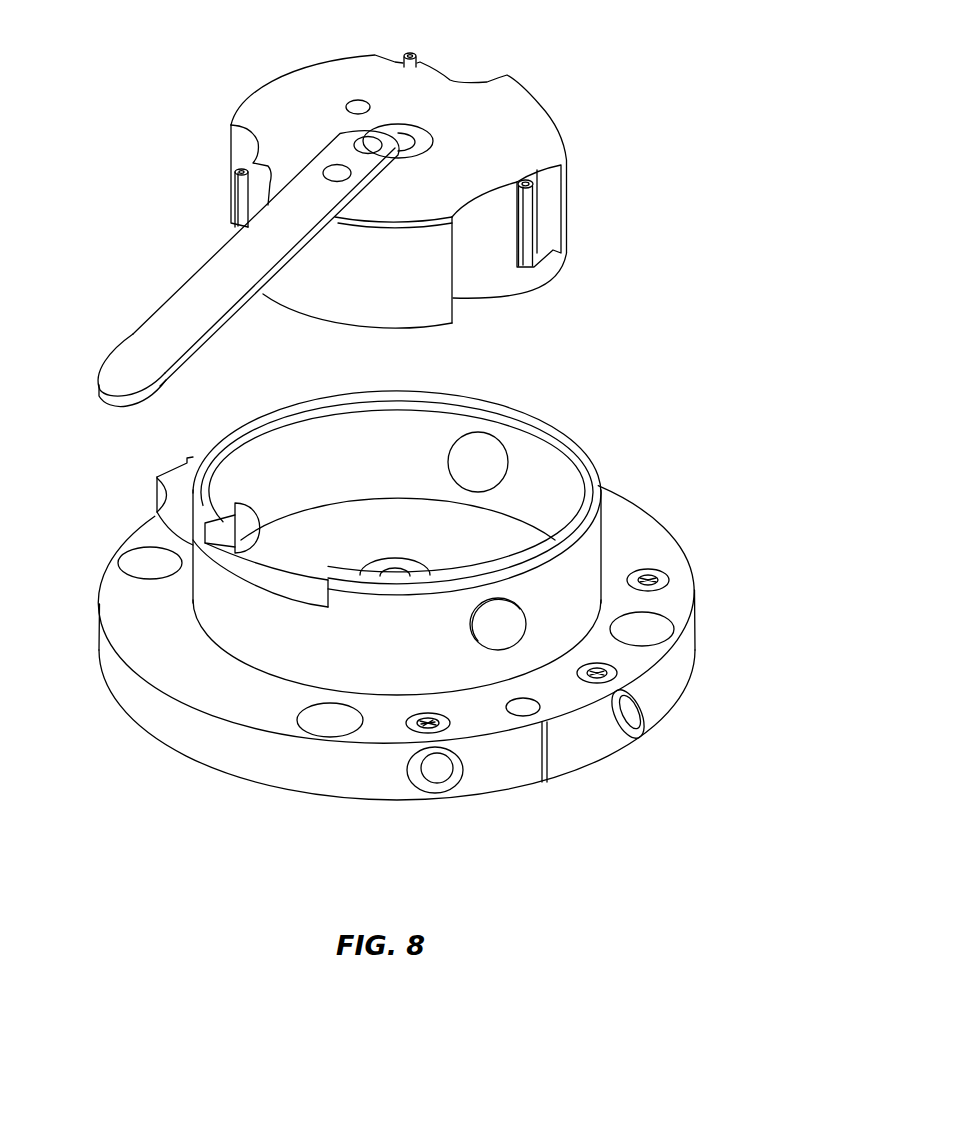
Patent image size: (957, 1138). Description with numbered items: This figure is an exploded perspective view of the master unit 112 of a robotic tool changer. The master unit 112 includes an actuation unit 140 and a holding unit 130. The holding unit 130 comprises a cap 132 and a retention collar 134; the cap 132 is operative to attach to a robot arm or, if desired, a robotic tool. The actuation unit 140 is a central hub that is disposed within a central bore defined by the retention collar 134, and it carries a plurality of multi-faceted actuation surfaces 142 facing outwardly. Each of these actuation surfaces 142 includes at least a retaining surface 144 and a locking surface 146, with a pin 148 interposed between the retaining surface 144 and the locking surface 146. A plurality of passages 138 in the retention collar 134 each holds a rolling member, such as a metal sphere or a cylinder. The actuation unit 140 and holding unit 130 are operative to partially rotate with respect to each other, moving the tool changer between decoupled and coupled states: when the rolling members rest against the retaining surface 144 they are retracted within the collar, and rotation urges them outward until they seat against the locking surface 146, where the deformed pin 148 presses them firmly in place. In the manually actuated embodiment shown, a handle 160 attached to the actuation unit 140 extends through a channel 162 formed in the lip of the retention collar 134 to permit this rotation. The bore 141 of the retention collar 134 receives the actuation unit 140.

The master unit 112 is at (712, 380).
The holding unit 130 is at (575, 742).
The cap 132 is at (636, 535).
The retention collar 134 is at (555, 580).
The passages 138 is at (489, 447).
The actuation unit 140 is at (503, 105).
The central bore 141 is at (336, 465).
The multi-faceted actuation surfaces 142 is at (582, 270).
The retaining surface 144 is at (478, 247).
The locking surface 146 is at (550, 205).
The pin 148 is at (531, 222).
The handle 160 is at (182, 313).
The channel 162 is at (258, 569).